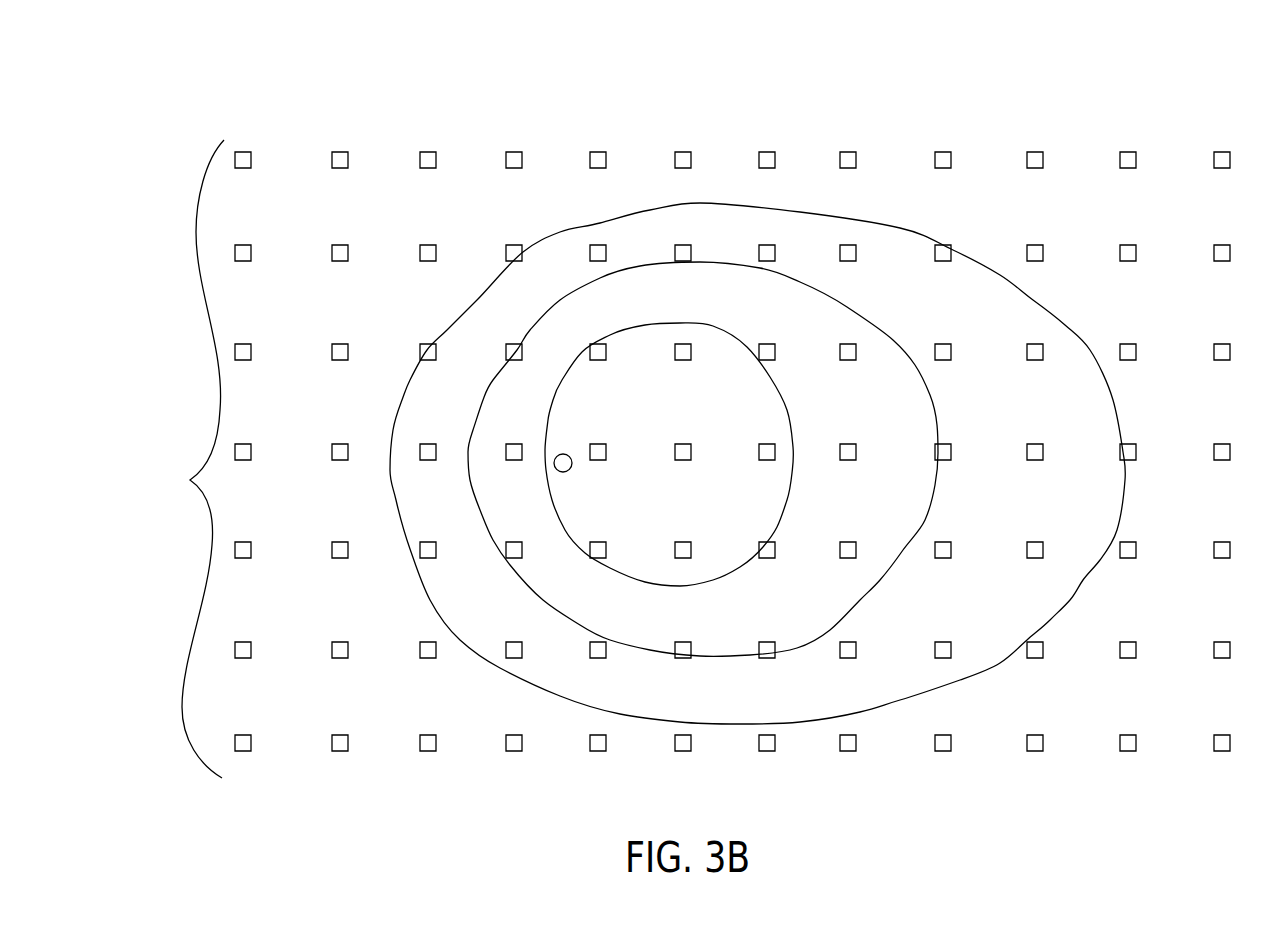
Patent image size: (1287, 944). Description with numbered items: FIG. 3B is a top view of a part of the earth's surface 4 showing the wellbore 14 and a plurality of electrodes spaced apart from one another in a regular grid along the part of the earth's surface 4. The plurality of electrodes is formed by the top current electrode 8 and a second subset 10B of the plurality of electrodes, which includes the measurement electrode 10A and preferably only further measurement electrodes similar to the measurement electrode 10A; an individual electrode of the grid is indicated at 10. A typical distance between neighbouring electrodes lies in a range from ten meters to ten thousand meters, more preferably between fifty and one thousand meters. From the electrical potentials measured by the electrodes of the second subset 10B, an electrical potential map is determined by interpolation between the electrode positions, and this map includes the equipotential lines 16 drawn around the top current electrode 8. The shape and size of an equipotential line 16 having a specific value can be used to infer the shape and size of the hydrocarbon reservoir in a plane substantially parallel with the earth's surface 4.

The part of the earth's surface 4 is at (1062, 193).
The top current electrode 8 is at (682, 443).
The tactile element 10 is at (1127, 660).
The measurement electrode 10A is at (430, 153).
The second subset of the plurality of electrodes 10B is at (200, 459).
The wellbore 14 is at (570, 453).
The equipotential lines 16 is at (697, 202).